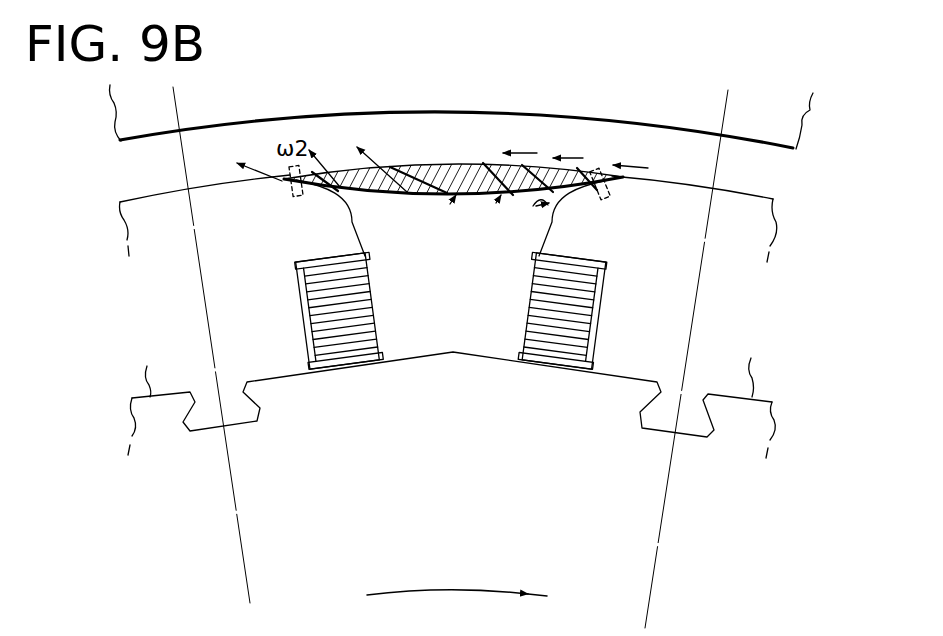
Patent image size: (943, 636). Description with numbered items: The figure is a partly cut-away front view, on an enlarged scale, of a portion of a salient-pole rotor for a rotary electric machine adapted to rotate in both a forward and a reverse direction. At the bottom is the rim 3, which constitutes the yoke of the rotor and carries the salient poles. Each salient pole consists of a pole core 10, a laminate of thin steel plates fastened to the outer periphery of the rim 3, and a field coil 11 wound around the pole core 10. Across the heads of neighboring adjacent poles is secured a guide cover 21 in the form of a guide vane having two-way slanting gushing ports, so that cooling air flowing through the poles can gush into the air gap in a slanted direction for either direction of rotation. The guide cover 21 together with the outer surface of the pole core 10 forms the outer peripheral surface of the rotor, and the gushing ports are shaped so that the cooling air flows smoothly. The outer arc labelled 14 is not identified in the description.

The rim 3 is at (770, 422).
The pole core 10 is at (677, 184).
The field coil 11 is at (540, 307).
The rotor 14 is at (802, 122).
The guide cover 21 is at (449, 164).